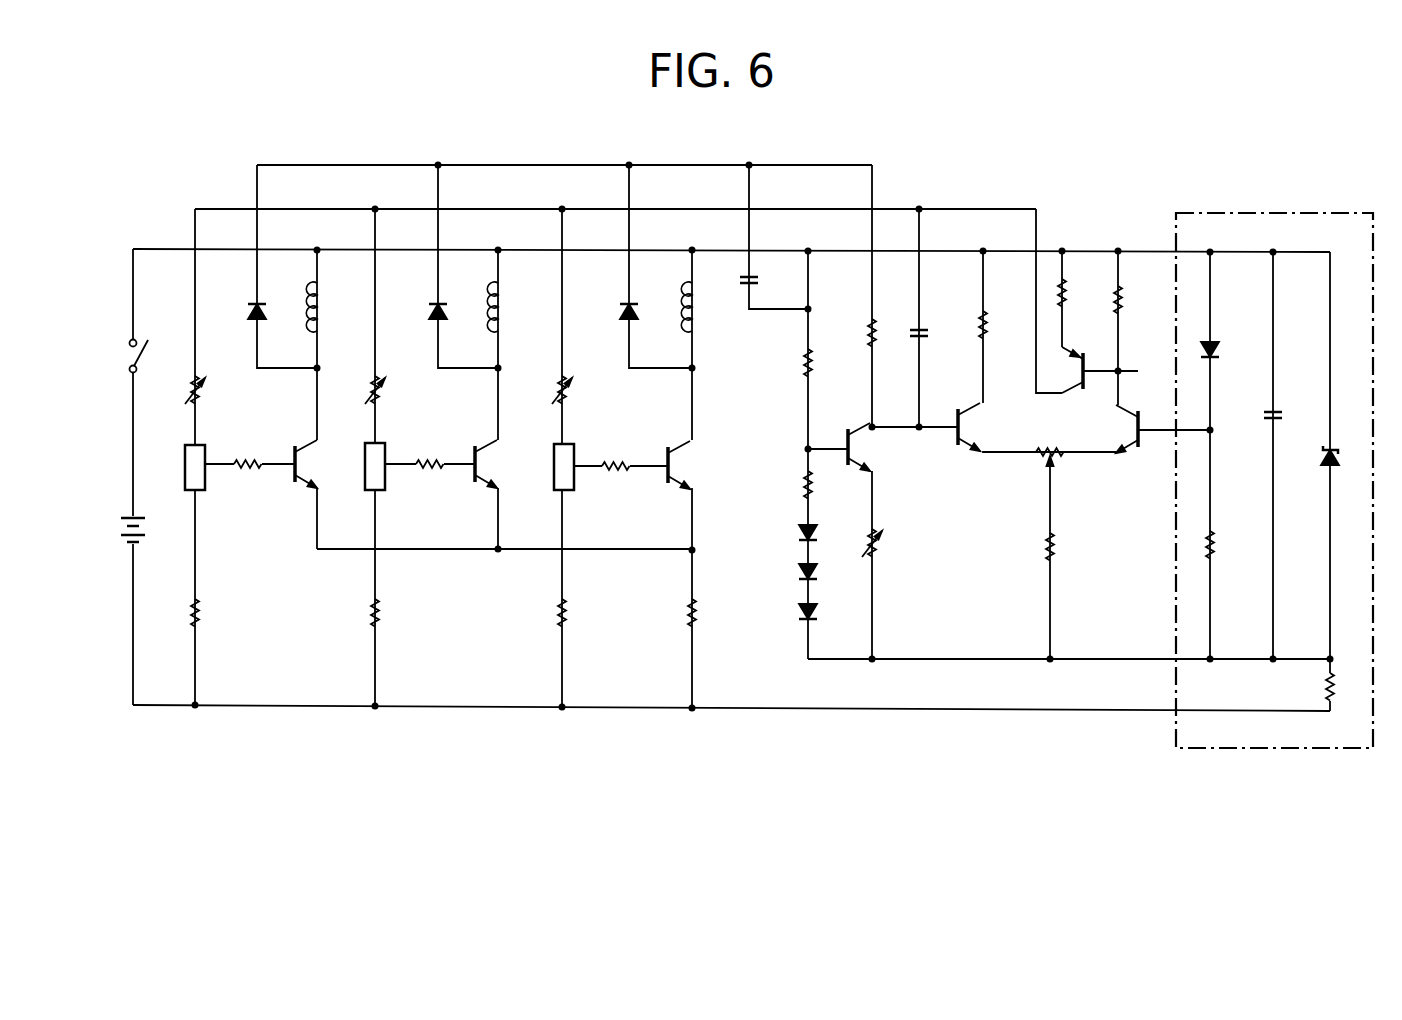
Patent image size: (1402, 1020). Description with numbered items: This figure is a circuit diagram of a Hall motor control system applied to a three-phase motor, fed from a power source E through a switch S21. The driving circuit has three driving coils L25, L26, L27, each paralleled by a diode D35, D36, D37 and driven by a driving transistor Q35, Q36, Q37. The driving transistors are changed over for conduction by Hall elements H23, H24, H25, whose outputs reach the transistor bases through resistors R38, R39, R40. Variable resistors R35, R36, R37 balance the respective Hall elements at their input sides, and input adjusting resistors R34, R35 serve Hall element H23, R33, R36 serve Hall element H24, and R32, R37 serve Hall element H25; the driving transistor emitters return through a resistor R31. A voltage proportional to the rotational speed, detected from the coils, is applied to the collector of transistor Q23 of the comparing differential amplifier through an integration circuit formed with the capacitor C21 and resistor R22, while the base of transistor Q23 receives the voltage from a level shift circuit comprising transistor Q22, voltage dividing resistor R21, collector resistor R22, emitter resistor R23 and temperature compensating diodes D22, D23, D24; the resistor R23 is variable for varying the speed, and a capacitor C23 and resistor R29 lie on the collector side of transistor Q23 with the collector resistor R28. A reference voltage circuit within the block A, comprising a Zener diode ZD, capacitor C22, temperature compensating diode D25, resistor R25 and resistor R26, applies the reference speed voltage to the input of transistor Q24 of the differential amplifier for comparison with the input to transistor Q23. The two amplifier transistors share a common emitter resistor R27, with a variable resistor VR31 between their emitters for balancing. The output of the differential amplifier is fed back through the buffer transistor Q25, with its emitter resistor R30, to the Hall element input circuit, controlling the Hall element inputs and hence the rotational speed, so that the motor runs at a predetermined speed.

The power switch S21 is at (128, 358).
The power source E is at (116, 524).
The diode D35 is at (265, 298).
The driving coil L25 is at (324, 298).
The variable resistor R35 is at (208, 394).
The Hall element H23 is at (208, 447).
The resistor R38 is at (240, 471).
The driving transistor Q35 is at (305, 483).
The input adjusting resistor R34 is at (202, 608).
The diode D36 is at (446, 299).
The driving coil L26 is at (510, 300).
The variable resistor R36 is at (388, 394).
The Hall element H24 is at (388, 447).
The resistor R39 is at (423, 471).
The driving transistor Q36 is at (485, 483).
The input adjusting resistor R33 is at (387, 608).
The diode D37 is at (636, 299).
The driving coil L27 is at (704, 318).
The variable resistor R37 is at (580, 394).
The Hall element H25 is at (577, 447).
The resistor R40 is at (610, 471).
The driving transistor Q37 is at (677, 483).
The input adjusting resistor R32 is at (576, 608).
The resistor R31 is at (702, 610).
The capacitor C21 is at (758, 283).
The voltage dividing resistor R21 is at (799, 365).
The temperature compensating diode D22 is at (794, 534).
The temperature compensating diode D23 is at (794, 574).
The temperature compensating diode D24 is at (794, 612).
The collector resistor R22 is at (867, 337).
The transistor Q22 is at (864, 448).
The emitter resistor R23 is at (886, 545).
The capacitor C23 is at (928, 330).
The resistor R29 is at (978, 336).
The transistor Q23 is at (968, 426).
The buffer transistor Q25 is at (1078, 382).
The emitter resistor R30 is at (1068, 298).
The collector resistor R28 is at (1123, 302).
The transistor Q24 is at (1130, 406).
The variable resistor VR31 is at (1060, 462).
The common emitter resistor R27 is at (1056, 549).
The constant voltage circuit A is at (1275, 212).
The temperature compensating diode D25 is at (1214, 336).
The resistor R25 is at (1216, 542).
The capacitor C22 is at (1264, 410).
The Zener diode ZD is at (1336, 444).
The resistor R26 is at (1322, 688).